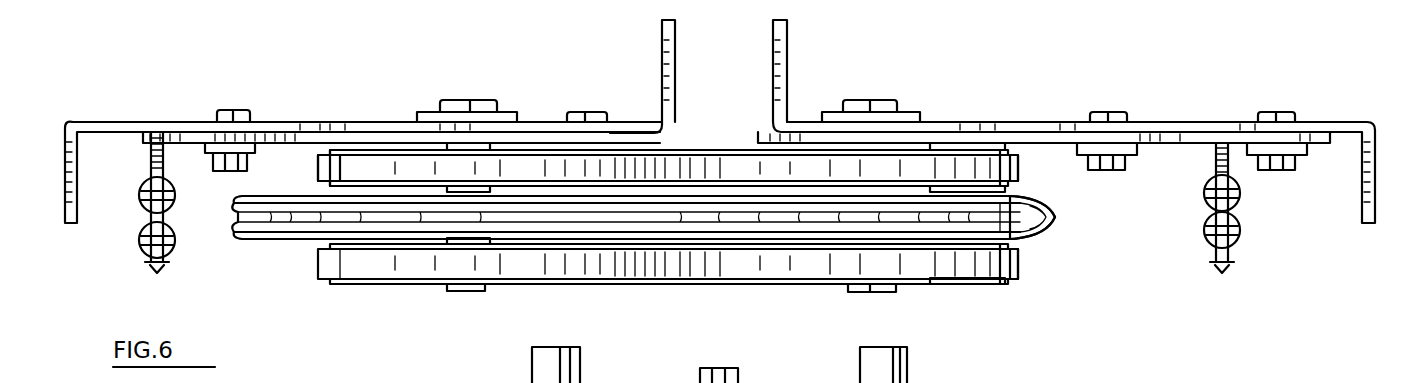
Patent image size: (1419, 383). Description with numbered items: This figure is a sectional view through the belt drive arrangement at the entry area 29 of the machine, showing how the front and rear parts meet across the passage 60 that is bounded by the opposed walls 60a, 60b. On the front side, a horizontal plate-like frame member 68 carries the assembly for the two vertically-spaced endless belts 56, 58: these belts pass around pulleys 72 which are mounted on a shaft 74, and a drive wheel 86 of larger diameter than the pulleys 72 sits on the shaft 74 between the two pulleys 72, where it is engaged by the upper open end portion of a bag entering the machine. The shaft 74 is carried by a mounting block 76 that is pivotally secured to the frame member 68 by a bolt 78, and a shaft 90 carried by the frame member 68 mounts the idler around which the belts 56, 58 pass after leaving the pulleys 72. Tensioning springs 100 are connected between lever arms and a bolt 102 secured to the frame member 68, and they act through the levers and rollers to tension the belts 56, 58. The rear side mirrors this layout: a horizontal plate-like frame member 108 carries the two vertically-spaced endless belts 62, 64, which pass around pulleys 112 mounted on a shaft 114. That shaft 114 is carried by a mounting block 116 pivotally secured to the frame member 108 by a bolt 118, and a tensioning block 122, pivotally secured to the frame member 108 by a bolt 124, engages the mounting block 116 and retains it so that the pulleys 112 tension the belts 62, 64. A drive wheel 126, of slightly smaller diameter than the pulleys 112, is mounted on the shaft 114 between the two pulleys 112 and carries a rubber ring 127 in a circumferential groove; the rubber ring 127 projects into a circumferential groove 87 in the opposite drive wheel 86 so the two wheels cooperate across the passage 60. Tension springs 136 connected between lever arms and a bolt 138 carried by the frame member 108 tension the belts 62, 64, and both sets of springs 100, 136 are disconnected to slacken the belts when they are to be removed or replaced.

The entry area 29 is at (707, 135).
The upper endless belt 56 is at (410, 167).
The lower endless belt 58 is at (323, 263).
The passage 60 is at (805, 76).
The opposed wall 60a is at (771, 44).
The opposed wall 60b is at (677, 44).
The upper endless belt 62 is at (988, 166).
The lower endless belt 64 is at (1022, 264).
The frame member 68 is at (272, 128).
The pulleys 72 is at (375, 147).
The shaft 74 is at (462, 289).
The mounting block 76 is at (318, 135).
The bolt 78 is at (227, 112).
The drive wheel 86 is at (243, 238).
The circumferential groove 87 is at (229, 218).
The shaft 90 is at (576, 112).
The tensioning springs 100 is at (140, 204).
The bolt 102 is at (148, 260).
The frame member 108 is at (1033, 122).
The pulleys 112 is at (943, 152).
The shaft 114 is at (853, 105).
The mounting block 116 is at (963, 135).
The bolt 118 is at (1117, 112).
The tensioning block 122 is at (1169, 144).
The bolt 124 is at (1282, 112).
The drive wheel 126 is at (1016, 193).
The rubber ring 127 is at (1043, 226).
The tension springs 136 is at (1240, 190).
The bolt 138 is at (1236, 250).